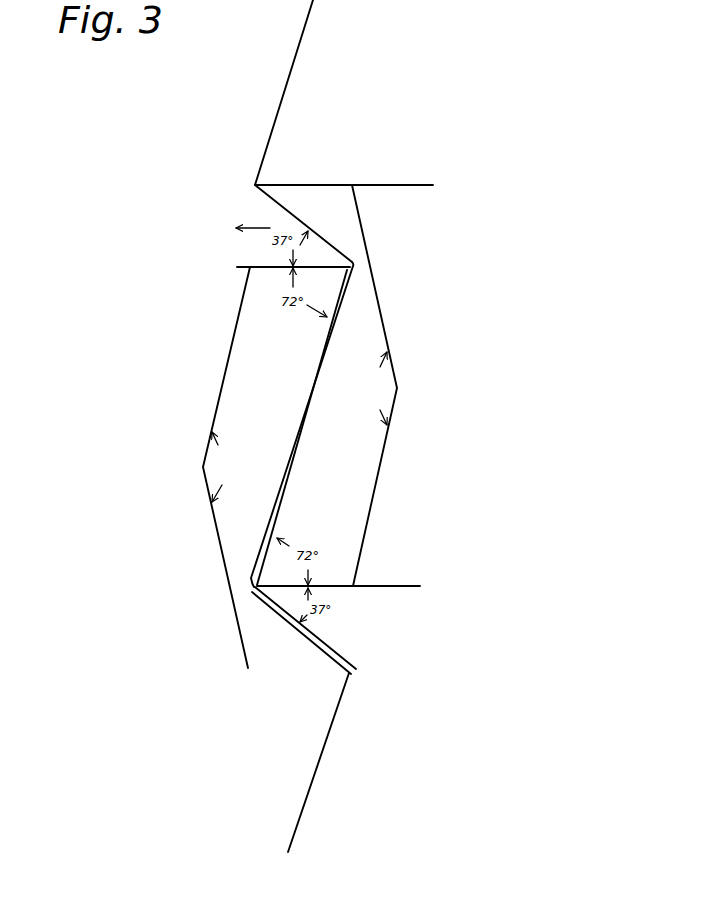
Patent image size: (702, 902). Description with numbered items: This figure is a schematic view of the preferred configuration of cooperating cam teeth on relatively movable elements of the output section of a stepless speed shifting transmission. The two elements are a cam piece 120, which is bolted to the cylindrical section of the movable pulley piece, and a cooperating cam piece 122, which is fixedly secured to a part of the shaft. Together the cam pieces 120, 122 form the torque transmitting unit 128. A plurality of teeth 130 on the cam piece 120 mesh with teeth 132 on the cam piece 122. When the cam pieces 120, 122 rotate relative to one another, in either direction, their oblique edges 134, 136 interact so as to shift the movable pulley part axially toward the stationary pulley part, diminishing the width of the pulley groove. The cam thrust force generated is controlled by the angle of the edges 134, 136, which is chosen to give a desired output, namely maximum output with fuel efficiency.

The cam piece 120 is at (257, 363).
The cooperating cam piece 122 is at (373, 457).
The torque transmitting unit 128 is at (527, 245).
The teeth 130 is at (317, 257).
The teeth 132 is at (328, 200).
The oblique edge 134 is at (322, 238).
The oblique edge 136 is at (285, 206).